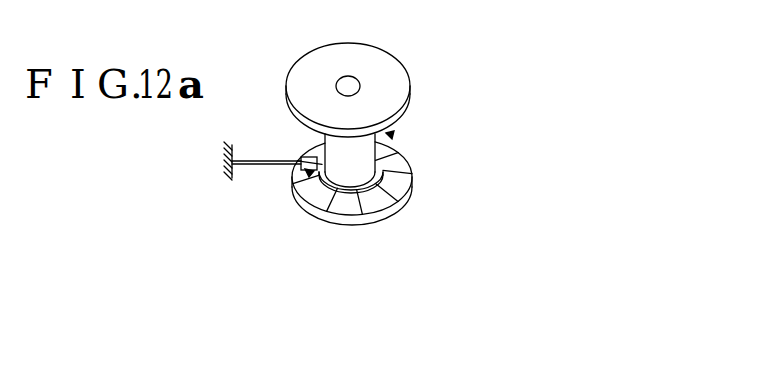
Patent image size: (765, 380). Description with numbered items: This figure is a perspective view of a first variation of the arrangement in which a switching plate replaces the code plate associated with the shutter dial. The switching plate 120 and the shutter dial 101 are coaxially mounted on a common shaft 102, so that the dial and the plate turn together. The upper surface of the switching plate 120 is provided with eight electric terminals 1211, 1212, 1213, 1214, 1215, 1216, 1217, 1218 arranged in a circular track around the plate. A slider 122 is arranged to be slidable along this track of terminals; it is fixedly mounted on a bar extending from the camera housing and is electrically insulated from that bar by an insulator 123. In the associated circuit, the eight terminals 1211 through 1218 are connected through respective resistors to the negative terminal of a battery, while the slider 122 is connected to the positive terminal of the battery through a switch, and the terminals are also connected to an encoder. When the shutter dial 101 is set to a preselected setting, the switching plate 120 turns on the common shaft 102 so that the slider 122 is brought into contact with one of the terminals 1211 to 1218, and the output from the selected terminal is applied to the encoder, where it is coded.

The shutter dial 101 is at (383, 77).
The common shaft 102 is at (348, 84).
The switching plate 120 is at (355, 216).
The electric terminal 1211 is at (302, 185).
The electric terminal 1212 is at (312, 198).
The electric terminal 1213 is at (340, 207).
The electric terminal 1214 is at (390, 196).
The electric terminal 1215 is at (403, 170).
The electric terminal 1216 is at (397, 143).
The electric terminal 1217 is at (397, 138).
The electric terminal 1218 is at (318, 150).
The slider 122 is at (300, 170).
The insulator 123 is at (300, 160).